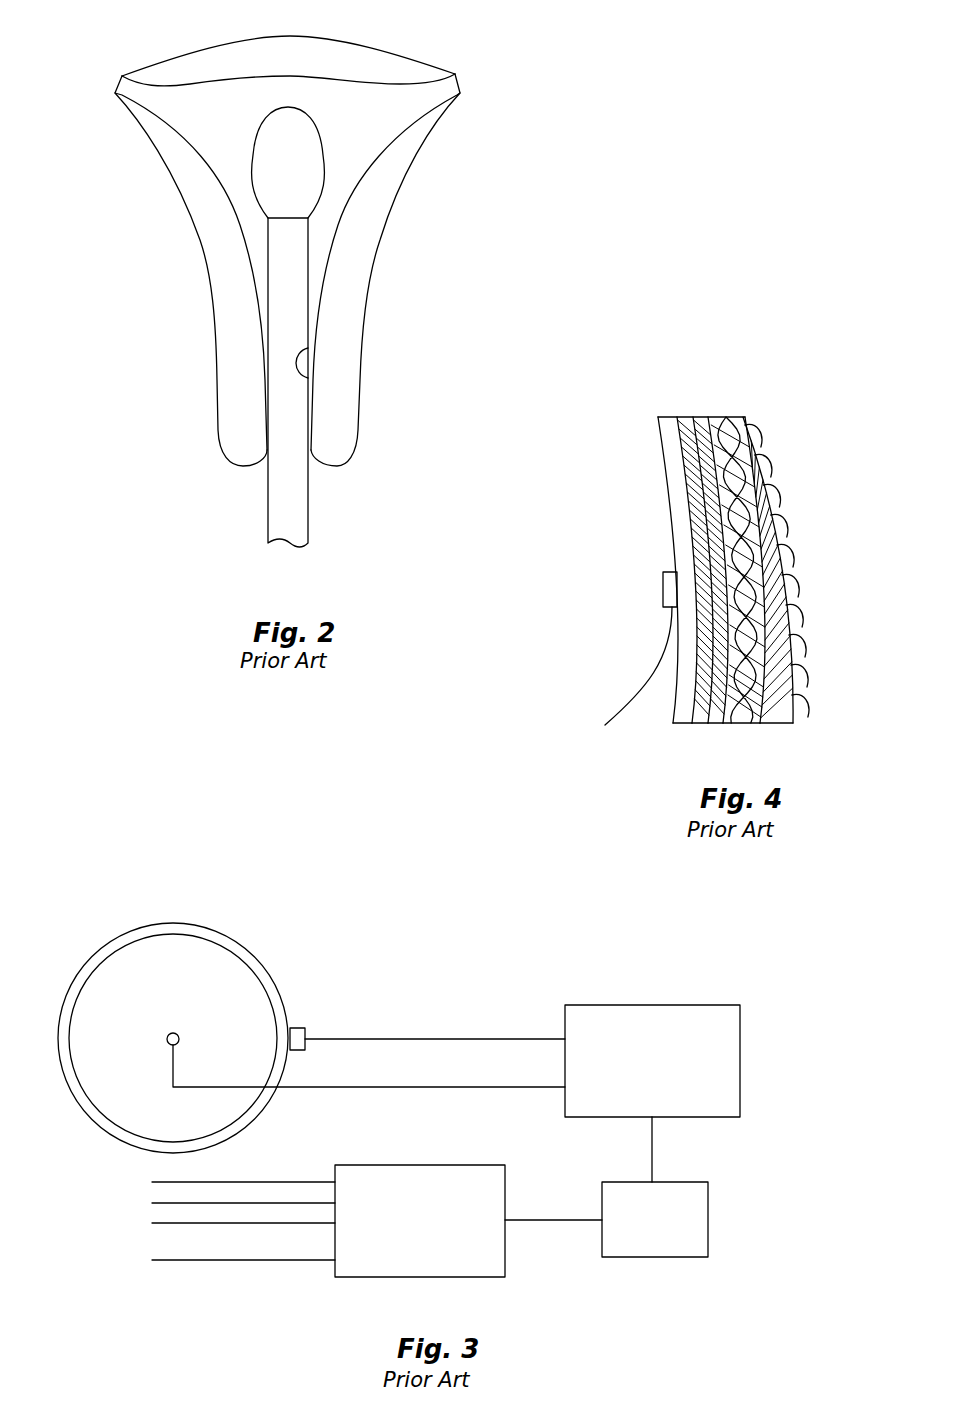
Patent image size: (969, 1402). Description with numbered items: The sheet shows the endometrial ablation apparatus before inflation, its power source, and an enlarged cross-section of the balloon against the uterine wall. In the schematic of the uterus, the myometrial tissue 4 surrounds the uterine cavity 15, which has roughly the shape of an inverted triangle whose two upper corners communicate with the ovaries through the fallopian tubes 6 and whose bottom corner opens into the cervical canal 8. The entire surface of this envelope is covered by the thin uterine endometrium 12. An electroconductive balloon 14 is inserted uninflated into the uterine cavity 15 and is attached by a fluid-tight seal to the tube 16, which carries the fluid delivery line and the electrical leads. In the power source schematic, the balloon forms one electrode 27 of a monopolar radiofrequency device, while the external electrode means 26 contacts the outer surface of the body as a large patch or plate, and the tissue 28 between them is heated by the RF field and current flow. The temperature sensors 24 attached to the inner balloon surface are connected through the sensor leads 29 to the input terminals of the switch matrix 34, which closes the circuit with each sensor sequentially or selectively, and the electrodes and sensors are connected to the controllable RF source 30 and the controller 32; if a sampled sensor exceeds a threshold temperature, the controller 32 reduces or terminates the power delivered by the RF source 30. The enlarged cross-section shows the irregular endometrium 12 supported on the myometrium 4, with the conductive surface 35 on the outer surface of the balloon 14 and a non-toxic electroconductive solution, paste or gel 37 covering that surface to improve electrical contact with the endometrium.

In FIG. 2, the myometrial tissue 4 is at (353, 300).
In FIG. 4, the myometrial tissue 4 is at (798, 585).
In FIG. 2, the fallopian tubes 6 is at (143, 86).
In FIG. 2, the cervical canal 8 is at (308, 378).
In FIG. 4, the uterine endometrium 12 is at (735, 548).
In FIG. 2, the balloon 14 is at (317, 175).
In FIG. 4, the balloon 14 is at (668, 435).
In FIG. 2, the uterine cavity 15 is at (203, 128).
In FIG. 2, the tube 16 is at (277, 252).
In FIG. 4, the temperature sensors 24 is at (663, 585).
In FIG. 3, the temperature sensors 24 is at (303, 1028).
In FIG. 3, the external electrode means 26 is at (165, 923).
In FIG. 3, the electrode 27 is at (167, 1039).
In FIG. 3, the tissue 28 is at (208, 953).
In FIG. 3, the electrode leads 29 is at (313, 1223).
In FIG. 3, the RF source 30 is at (643, 1005).
In FIG. 3, the controller 32 is at (708, 1227).
In FIG. 3, the switch matrix 34 is at (408, 1163).
In FIG. 4, the conductive surface 35 is at (692, 460).
In FIG. 4, the electroconductive solution, paste or gel 37 is at (693, 520).